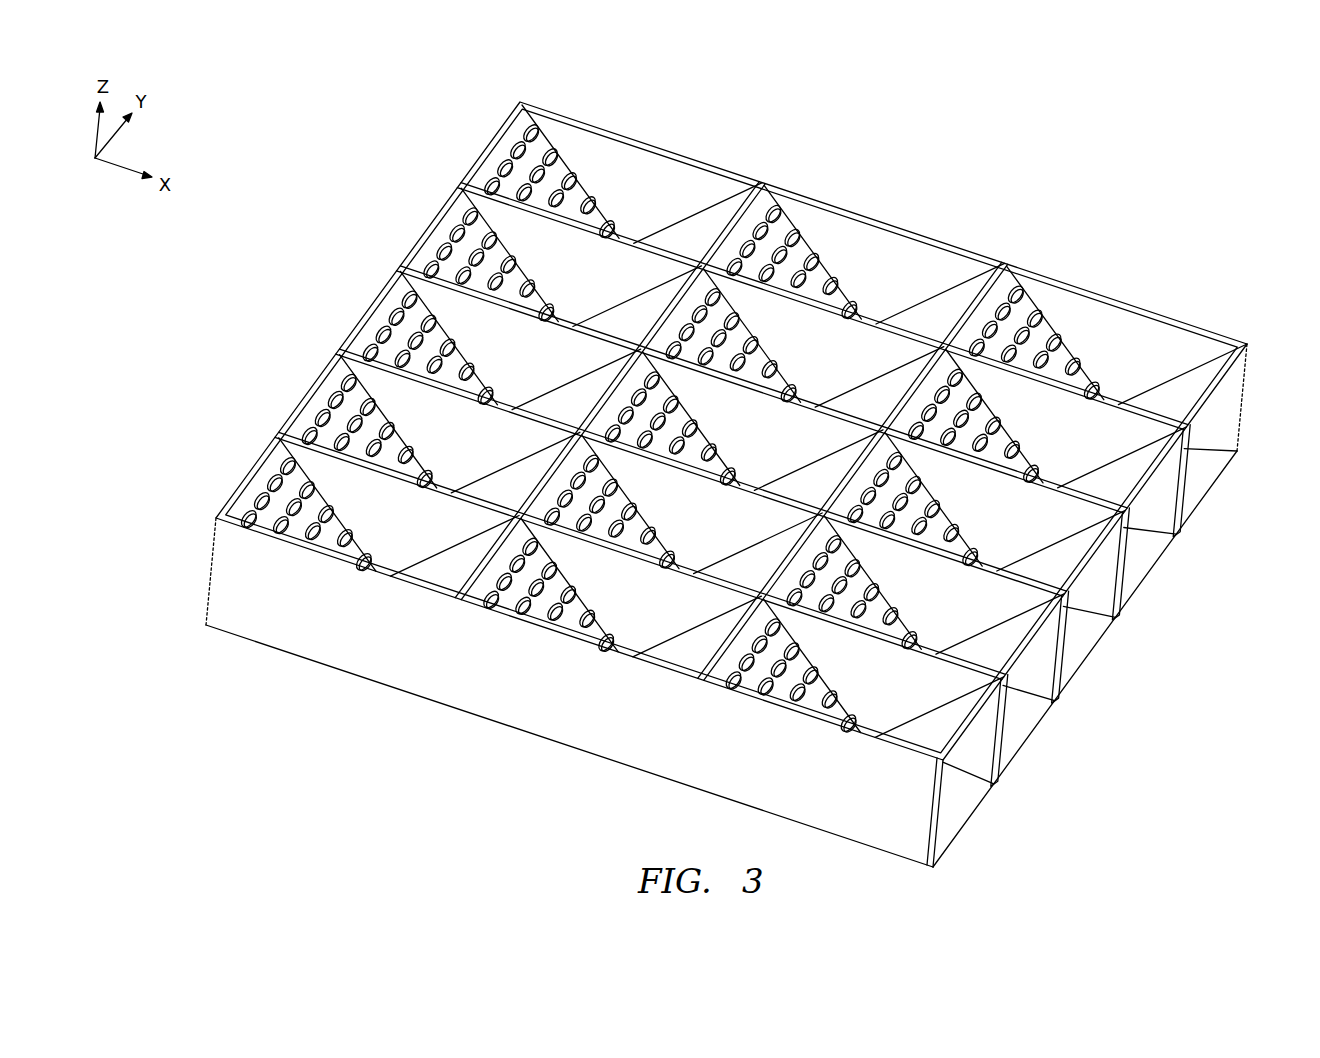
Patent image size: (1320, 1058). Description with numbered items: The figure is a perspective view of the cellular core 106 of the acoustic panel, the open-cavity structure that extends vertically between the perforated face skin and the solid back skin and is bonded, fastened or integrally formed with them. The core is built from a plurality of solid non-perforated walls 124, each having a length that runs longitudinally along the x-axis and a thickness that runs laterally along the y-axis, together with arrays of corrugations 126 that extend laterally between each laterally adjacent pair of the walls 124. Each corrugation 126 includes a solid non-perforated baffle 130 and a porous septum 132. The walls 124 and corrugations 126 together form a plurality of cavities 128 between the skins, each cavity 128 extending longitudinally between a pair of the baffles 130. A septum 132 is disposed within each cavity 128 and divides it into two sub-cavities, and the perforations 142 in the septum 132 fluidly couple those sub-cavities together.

The cellular core 106 is at (1148, 213).
The walls 124 is at (1217, 327).
The corrugations 126 is at (812, 240).
The cavities 128 is at (632, 170).
The baffle 130 is at (708, 215).
The septum 132 is at (547, 133).
The perforations 142 is at (523, 580).